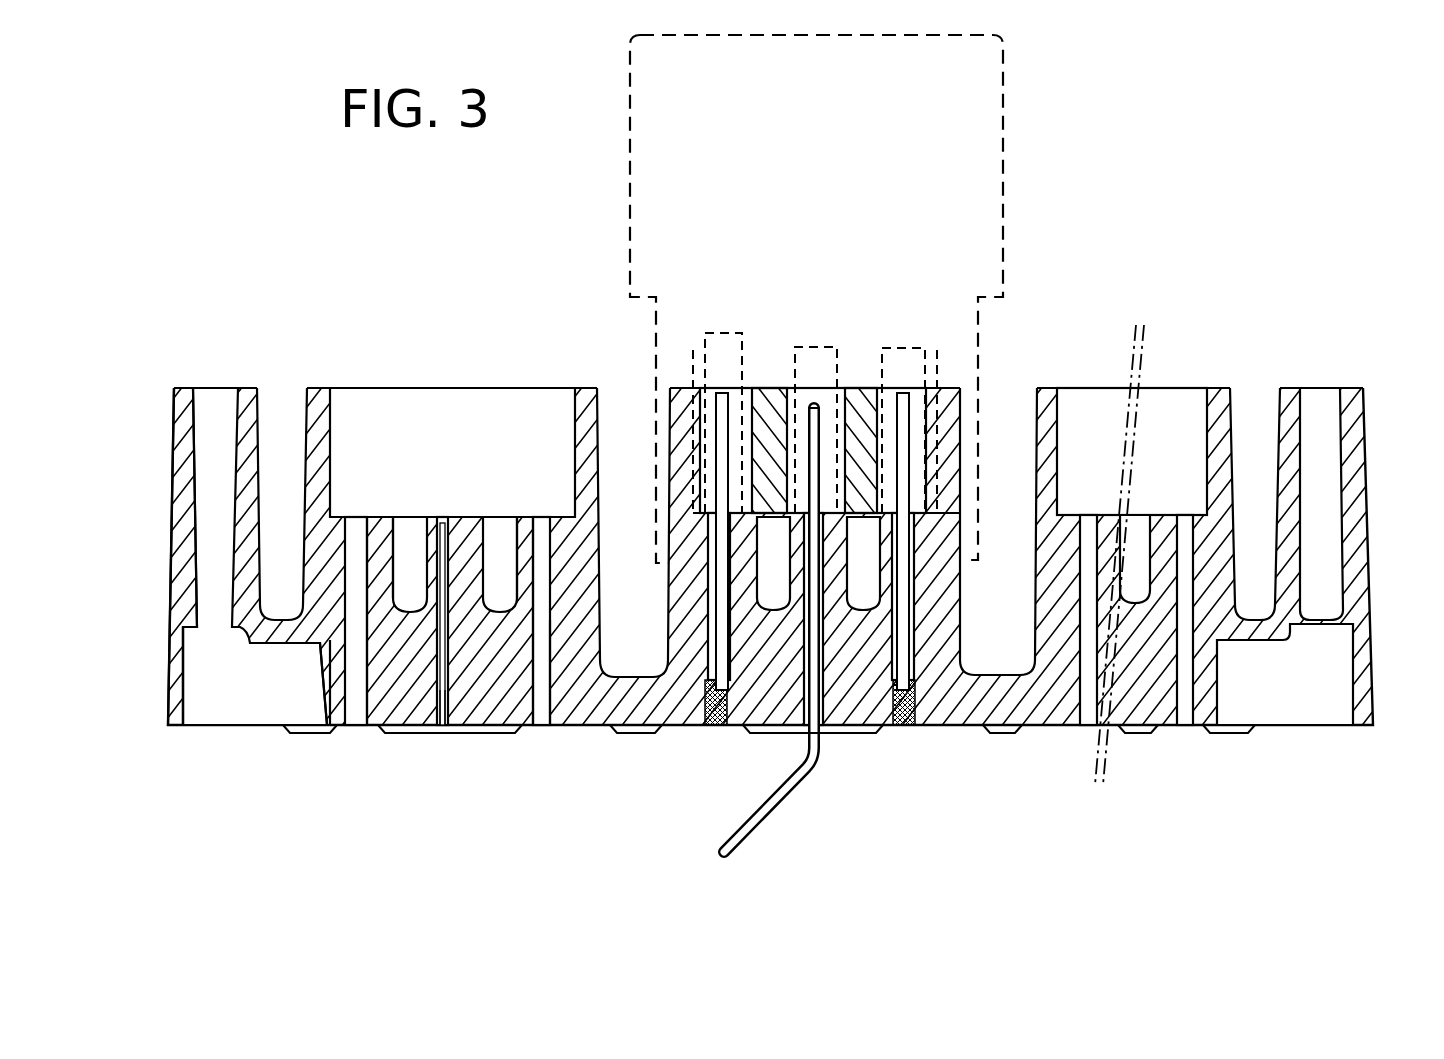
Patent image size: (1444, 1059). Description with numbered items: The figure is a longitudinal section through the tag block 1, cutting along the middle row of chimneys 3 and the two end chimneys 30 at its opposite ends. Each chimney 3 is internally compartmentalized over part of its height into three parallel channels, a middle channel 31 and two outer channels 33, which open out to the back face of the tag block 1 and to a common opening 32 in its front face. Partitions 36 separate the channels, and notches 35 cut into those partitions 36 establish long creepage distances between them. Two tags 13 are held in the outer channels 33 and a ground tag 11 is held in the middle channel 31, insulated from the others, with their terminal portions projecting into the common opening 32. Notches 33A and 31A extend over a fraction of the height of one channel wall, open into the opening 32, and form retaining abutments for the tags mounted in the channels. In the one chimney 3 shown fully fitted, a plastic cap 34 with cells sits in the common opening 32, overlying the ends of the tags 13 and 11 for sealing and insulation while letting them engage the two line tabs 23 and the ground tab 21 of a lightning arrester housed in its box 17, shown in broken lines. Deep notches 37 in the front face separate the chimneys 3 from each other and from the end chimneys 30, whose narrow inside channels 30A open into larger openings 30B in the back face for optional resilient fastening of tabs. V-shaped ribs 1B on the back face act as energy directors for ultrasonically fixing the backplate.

The tag block 1 is at (1376, 551).
The V-shaped ribs 1B is at (983, 727).
The chimneys 3 is at (678, 386).
The ground tag 11 is at (822, 693).
The tags 13 is at (713, 713).
The boxes 17 is at (1003, 200).
The ground tab 21 is at (818, 357).
The line tabs 23 is at (725, 350).
The end chimneys 30 is at (183, 533).
The inside channels 30A is at (213, 462).
The openings 30B is at (235, 703).
The middle channel 31 is at (450, 532).
The notch 31A is at (430, 700).
The common opening 32 is at (402, 403).
The outer channels 33 is at (360, 532).
The notch 33A is at (330, 640).
The plastic cap 34 is at (857, 407).
The notches 35 is at (495, 530).
The partitions 36 is at (383, 690).
The deep notches 37 is at (283, 410).